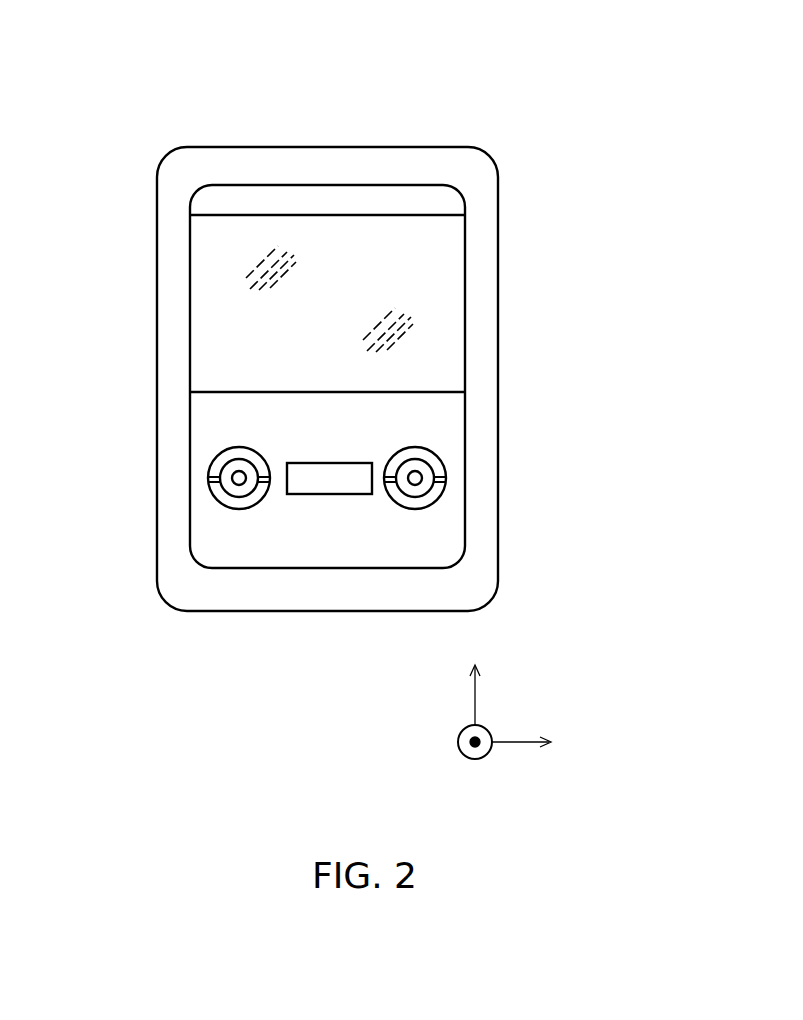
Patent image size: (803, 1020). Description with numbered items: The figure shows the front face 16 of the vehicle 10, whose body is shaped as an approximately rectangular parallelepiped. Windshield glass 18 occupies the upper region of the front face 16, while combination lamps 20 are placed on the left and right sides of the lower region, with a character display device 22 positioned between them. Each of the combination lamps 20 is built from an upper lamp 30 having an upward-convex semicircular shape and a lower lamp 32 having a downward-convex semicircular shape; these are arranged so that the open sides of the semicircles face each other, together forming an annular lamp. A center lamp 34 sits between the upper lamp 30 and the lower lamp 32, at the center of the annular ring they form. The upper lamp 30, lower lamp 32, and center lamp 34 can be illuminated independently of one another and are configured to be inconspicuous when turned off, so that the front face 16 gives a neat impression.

The vehicle 10 is at (421, 94).
The front face 16 is at (139, 207).
The windshield glass 18 is at (447, 240).
The combination lamps 20 is at (214, 439).
The character display device 22 is at (312, 495).
The upper lamp 30 is at (213, 458).
The lower lamp 32 is at (222, 512).
The center lamp 34 is at (235, 483).